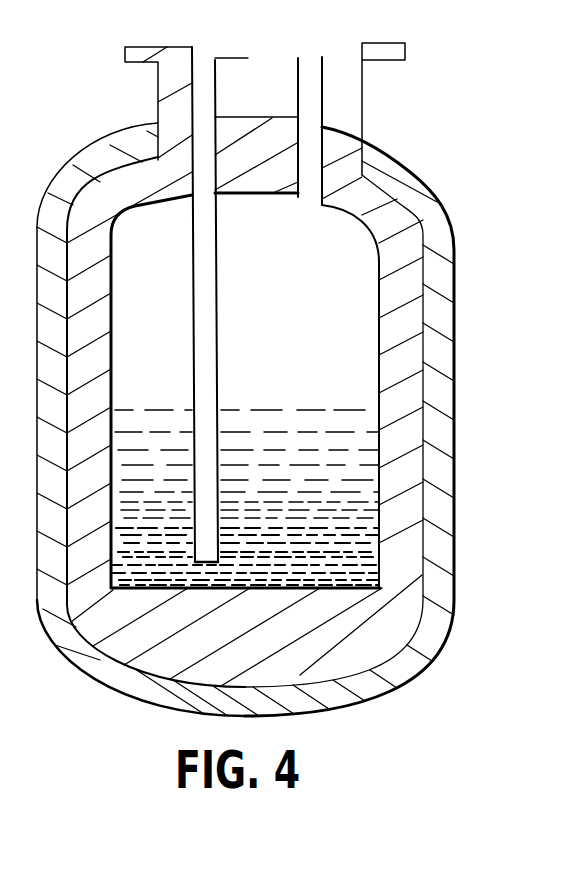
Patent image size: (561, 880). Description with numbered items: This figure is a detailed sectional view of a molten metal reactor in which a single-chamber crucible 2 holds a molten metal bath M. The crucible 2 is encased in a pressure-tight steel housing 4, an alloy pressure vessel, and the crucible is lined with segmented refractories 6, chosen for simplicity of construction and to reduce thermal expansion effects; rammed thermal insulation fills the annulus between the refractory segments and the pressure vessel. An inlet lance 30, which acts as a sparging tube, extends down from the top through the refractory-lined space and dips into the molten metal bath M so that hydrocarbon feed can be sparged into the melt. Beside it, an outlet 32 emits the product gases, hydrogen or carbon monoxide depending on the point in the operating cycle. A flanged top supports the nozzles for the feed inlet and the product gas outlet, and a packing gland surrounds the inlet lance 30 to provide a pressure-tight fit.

The crucible 2 is at (285, 419).
The pressure-tight steel housing 4 is at (445, 441).
The segmented refractories 6 is at (400, 286).
The inlet lance 30 is at (207, 322).
The outlet 32 is at (308, 96).
The molten metal bath M is at (245, 497).